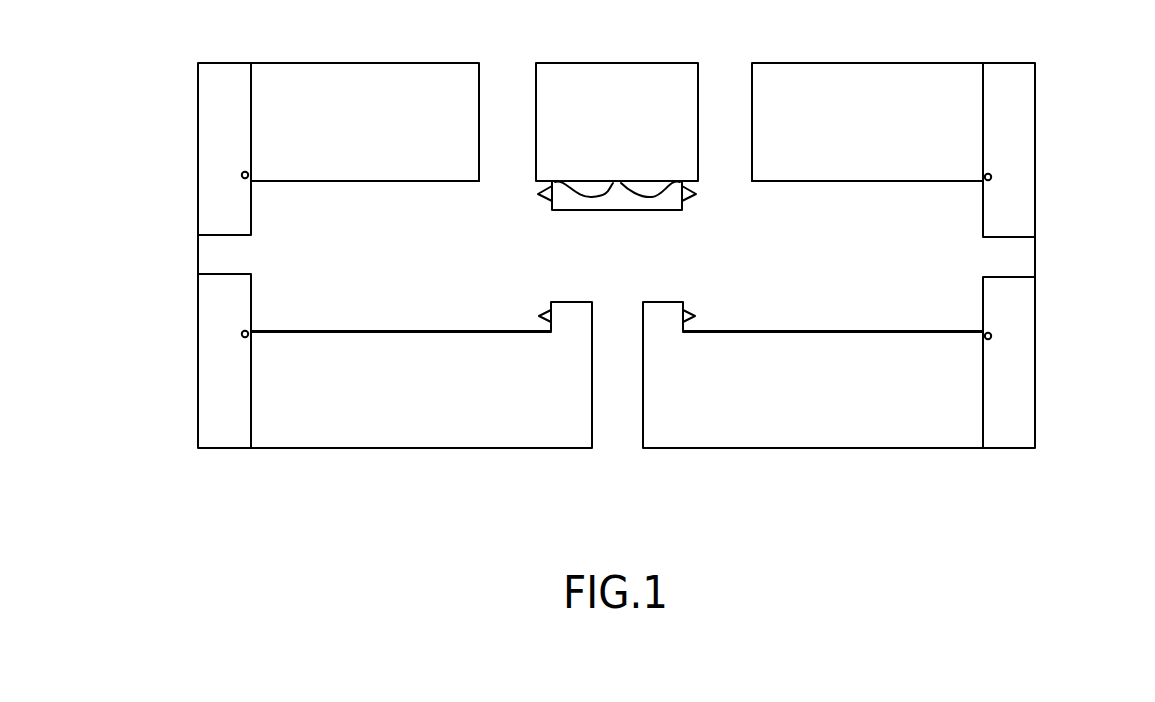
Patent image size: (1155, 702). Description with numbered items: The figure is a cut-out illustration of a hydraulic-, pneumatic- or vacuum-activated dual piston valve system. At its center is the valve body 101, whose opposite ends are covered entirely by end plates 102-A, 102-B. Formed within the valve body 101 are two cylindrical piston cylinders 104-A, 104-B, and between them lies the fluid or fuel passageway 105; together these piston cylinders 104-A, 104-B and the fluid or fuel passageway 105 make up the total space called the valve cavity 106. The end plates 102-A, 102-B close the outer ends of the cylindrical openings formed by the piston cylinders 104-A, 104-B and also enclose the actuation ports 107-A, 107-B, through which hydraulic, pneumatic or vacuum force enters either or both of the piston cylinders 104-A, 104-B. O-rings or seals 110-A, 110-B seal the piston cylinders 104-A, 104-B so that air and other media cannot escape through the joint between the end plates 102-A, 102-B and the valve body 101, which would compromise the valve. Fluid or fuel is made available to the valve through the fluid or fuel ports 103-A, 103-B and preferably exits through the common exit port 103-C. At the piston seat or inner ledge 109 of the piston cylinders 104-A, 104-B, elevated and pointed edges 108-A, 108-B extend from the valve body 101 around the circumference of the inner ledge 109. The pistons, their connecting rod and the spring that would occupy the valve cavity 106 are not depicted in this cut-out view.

The valve body 101 is at (388, 132).
The end plate 102-A is at (217, 86).
The end plate 102-B is at (1013, 90).
The fluid or fuel port 103-A is at (503, 83).
The fluid or fuel port 103-B is at (722, 85).
The fluid or fuel common exit port 103-C is at (620, 424).
The piston cylinder 104-A is at (442, 265).
The piston cylinder 104-B is at (871, 265).
The fluid or fuel passageway 105 is at (640, 247).
The valve cavity 106 is at (639, 295).
The actuation port 107-A is at (238, 256).
The actuation port 107-B is at (992, 258).
The elevated and pointed edge 108-A is at (540, 194).
The elevated and pointed edge 108-B is at (694, 194).
The piston seat or inner ledge 109 is at (676, 362).
The O-ring or seal 110-A is at (243, 176).
The O-ring or seal 110-B is at (991, 176).